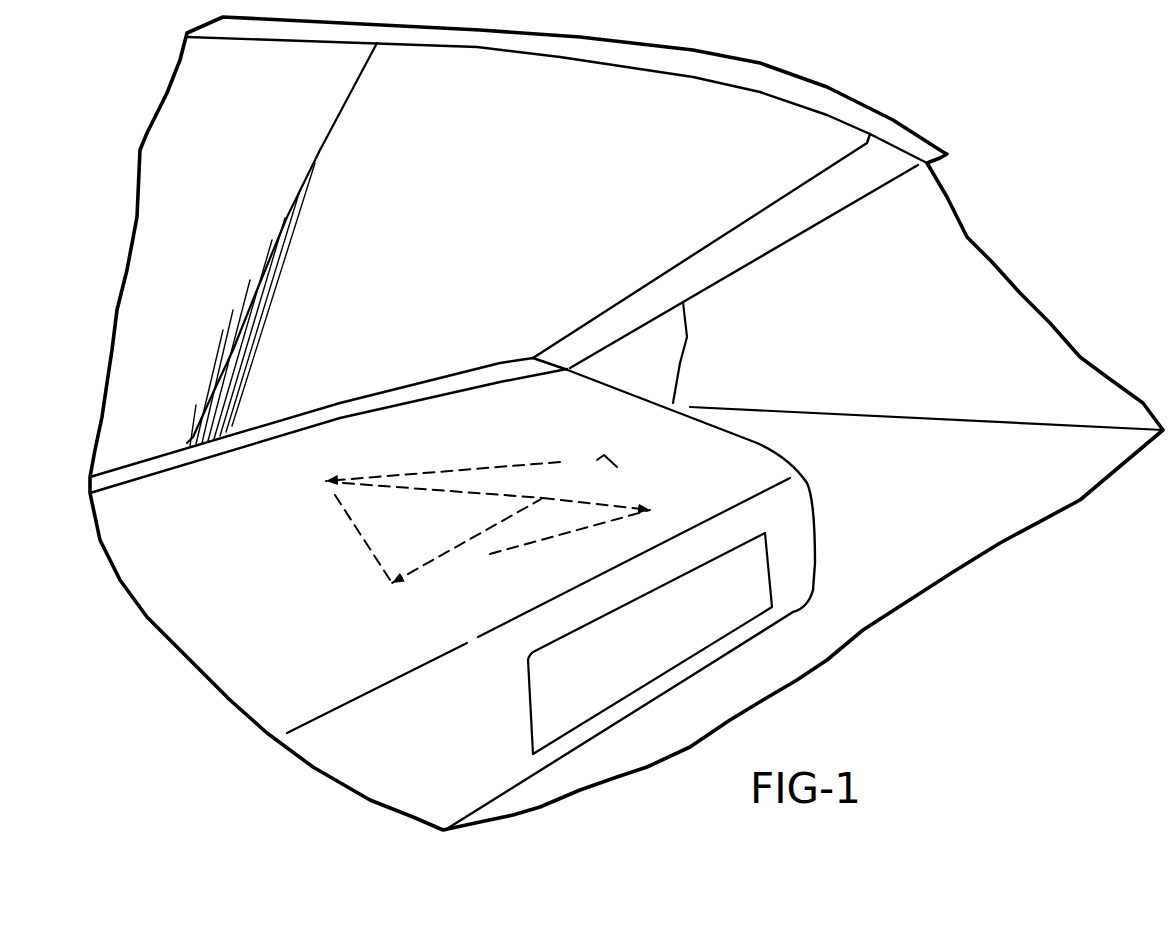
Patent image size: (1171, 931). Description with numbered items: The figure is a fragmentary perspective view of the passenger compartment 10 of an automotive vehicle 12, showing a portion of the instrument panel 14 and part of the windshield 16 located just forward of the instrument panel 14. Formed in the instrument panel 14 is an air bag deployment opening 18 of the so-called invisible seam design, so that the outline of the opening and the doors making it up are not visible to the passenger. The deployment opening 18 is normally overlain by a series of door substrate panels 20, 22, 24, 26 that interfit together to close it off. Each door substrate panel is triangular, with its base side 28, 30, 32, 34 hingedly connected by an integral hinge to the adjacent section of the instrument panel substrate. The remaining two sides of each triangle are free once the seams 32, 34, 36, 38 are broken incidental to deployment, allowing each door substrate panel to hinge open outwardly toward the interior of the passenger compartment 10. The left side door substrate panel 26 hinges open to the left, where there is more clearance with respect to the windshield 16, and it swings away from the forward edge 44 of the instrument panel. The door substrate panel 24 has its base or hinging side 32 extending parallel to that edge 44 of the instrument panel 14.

The passenger compartment 10 is at (1037, 347).
The automotive vehicle 12 is at (848, 66).
The instrument panel 14 is at (183, 657).
The windshield 16 is at (150, 277).
The air bag deployment opening 18 is at (368, 542).
The door substrate panel 20 is at (514, 478).
The door substrate panel 22 is at (622, 489).
The door substrate panel 24 is at (521, 535).
The left side door substrate panel 26 is at (395, 552).
The base side 28 is at (455, 467).
The base side 30 is at (645, 503).
The base side 32 is at (417, 490).
The base side 34 is at (567, 481).
The seam 36 is at (565, 500).
The seam 38 is at (437, 553).
The forward edge of the instrument panel 44 is at (738, 505).